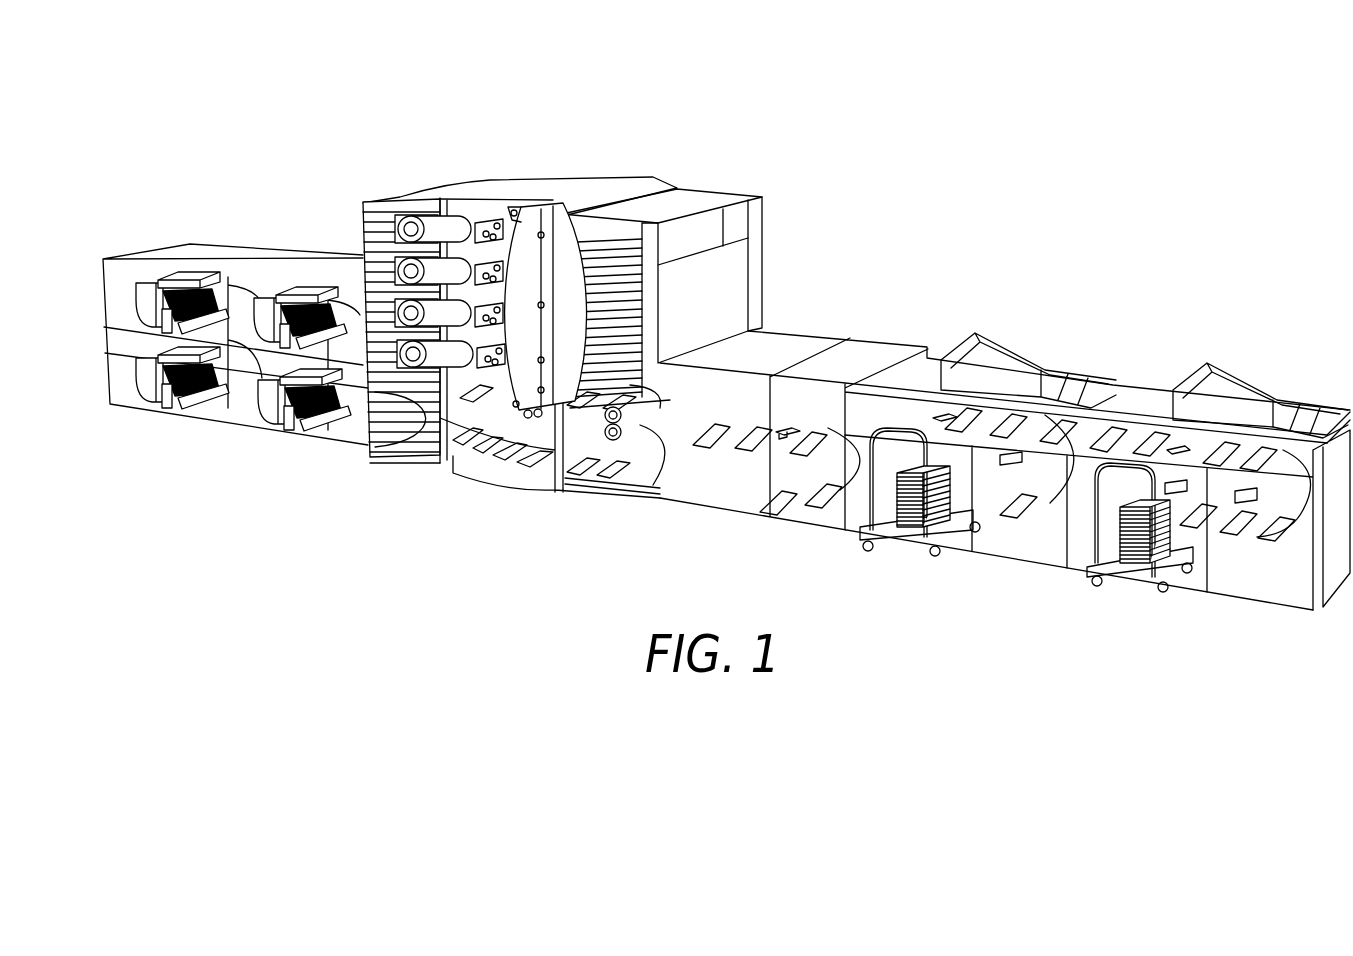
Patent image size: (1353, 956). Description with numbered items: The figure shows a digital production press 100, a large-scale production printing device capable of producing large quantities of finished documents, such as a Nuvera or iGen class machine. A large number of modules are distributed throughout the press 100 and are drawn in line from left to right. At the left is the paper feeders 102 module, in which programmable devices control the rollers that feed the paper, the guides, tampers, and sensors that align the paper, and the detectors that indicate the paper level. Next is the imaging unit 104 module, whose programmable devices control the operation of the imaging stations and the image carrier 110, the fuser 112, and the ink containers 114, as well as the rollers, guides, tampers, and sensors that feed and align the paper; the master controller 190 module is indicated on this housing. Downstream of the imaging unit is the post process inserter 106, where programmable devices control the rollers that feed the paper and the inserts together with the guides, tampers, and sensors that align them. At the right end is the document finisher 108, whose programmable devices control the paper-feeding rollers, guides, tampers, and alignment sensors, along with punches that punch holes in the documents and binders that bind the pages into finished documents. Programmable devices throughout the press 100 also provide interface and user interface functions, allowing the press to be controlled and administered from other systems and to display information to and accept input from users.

The digital production press 100 is at (333, 136).
The paper feeders module 102 is at (192, 272).
The imaging unit module 104 is at (650, 178).
The post process inserter 106 is at (808, 505).
The document finisher 108 is at (1053, 425).
The image carrier 110 is at (422, 212).
The fuser 112 is at (622, 443).
The ink containers 114 is at (540, 232).
The master controller module 190 is at (710, 300).